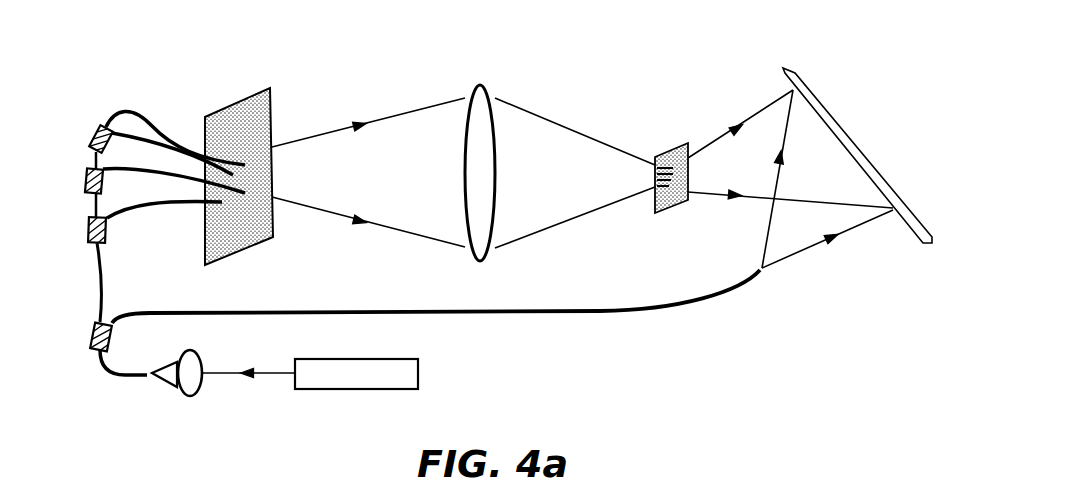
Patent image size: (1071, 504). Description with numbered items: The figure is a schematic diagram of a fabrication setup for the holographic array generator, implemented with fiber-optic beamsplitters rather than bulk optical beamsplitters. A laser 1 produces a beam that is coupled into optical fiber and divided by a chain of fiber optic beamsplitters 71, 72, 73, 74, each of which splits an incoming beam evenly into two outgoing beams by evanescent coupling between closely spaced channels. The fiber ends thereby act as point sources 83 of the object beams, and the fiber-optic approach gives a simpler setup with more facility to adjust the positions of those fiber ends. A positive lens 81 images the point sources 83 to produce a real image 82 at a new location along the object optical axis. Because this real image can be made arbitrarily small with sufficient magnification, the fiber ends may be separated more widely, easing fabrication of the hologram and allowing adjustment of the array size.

The laser 1 is at (337, 393).
The fiber-optic beamsplitter 71 is at (117, 338).
The fiber-optic beamsplitter 72 is at (113, 233).
The fiber-optic beamsplitter 73 is at (80, 177).
The fiber-optic beamsplitter 74 is at (88, 133).
The positive lens 81 is at (482, 82).
The real image 82 is at (667, 145).
The point sources 83 is at (247, 148).